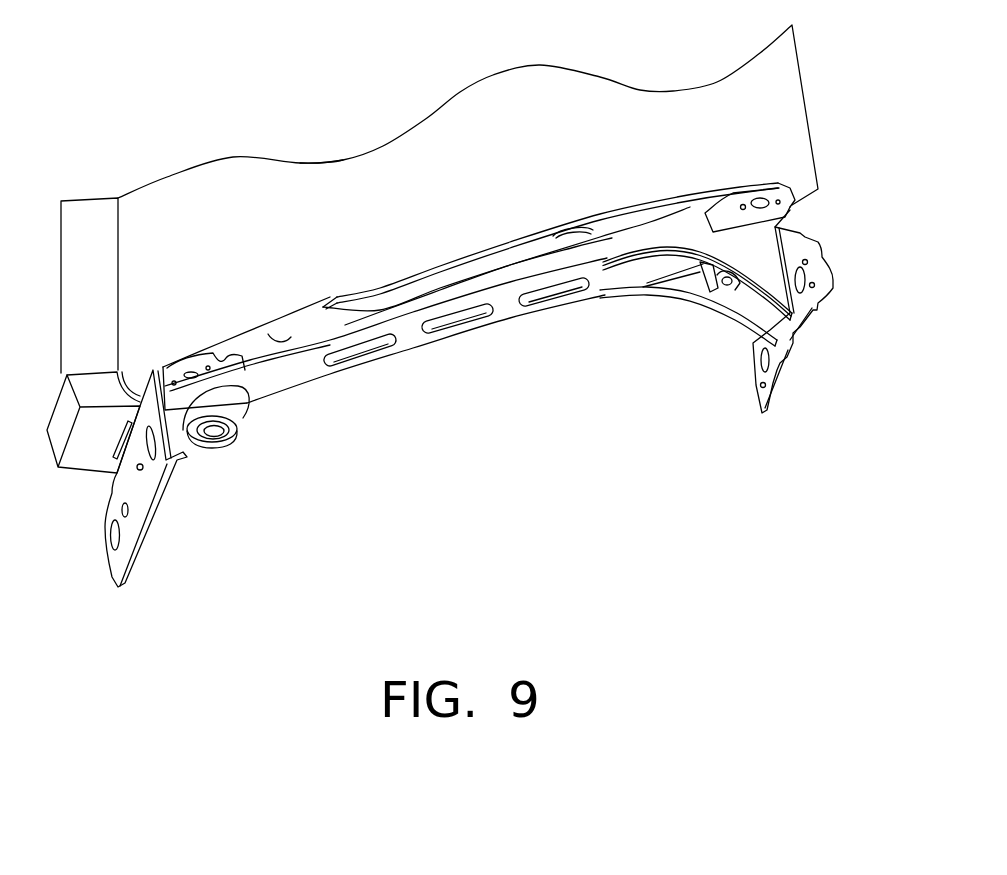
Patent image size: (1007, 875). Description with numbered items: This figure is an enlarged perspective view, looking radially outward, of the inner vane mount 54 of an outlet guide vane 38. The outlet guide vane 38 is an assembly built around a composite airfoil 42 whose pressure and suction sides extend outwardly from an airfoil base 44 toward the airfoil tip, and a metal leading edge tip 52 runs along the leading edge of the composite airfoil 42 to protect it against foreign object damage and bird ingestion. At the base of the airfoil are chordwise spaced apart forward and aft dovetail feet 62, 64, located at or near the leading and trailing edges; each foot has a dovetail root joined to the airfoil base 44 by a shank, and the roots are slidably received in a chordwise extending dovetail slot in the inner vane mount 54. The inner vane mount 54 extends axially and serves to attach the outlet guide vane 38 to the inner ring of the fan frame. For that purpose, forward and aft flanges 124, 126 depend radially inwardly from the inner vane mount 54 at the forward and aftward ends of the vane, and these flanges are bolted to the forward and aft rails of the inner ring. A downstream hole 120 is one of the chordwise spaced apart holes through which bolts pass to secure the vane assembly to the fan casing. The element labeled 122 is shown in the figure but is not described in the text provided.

The outlet guide vane 38 is at (805, 80).
The composite airfoil 42 is at (260, 195).
The metal leading edge tip 52 is at (60, 237).
The airfoil base 44 is at (337, 297).
The aft dovetail foot 64 is at (678, 207).
The forward dovetail foot 62 is at (387, 334).
The inner vane mount 54 is at (601, 264).
The brace 122 is at (737, 287).
The aft flange 126 is at (790, 378).
The downstream hole 120 is at (230, 440).
The forward flange 124 is at (160, 508).